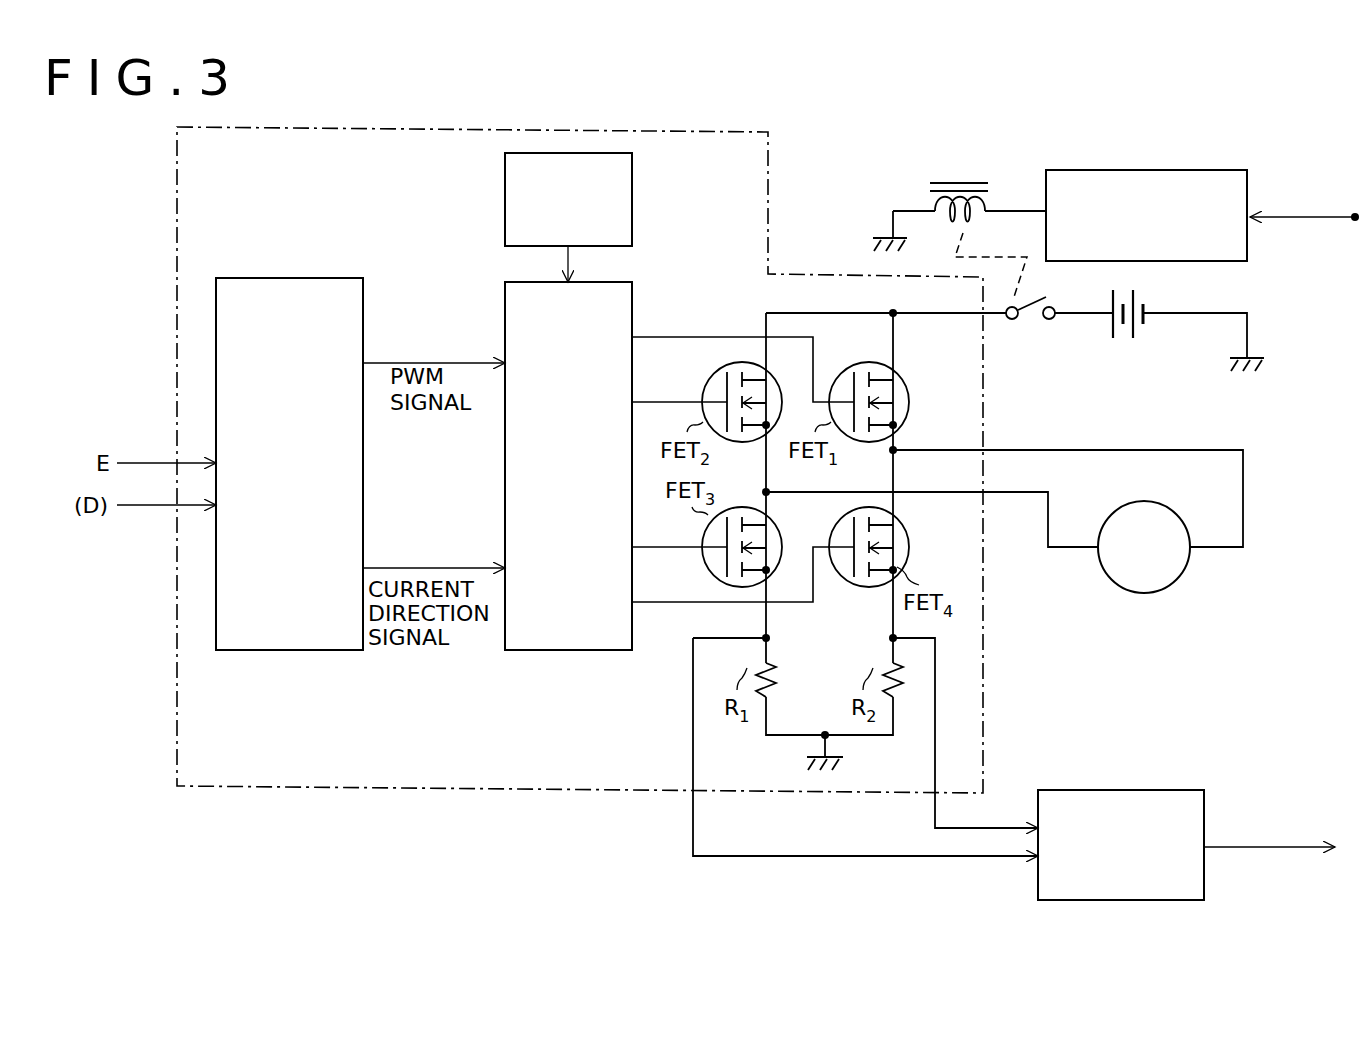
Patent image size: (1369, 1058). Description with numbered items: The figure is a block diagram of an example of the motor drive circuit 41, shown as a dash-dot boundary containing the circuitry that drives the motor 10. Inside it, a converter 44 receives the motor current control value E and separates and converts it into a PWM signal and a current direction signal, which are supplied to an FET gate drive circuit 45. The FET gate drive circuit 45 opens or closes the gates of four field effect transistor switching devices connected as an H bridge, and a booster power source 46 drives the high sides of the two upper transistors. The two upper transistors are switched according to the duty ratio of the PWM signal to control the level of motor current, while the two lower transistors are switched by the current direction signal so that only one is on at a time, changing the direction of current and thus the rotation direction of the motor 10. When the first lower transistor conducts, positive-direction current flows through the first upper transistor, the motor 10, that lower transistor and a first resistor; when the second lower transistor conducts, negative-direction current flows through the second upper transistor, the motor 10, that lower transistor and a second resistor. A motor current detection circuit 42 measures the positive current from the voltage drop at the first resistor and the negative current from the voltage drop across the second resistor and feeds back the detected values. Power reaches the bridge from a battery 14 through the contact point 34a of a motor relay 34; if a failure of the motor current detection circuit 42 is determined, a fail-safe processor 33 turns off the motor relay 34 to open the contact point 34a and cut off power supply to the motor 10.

The motor 10 is at (1178, 508).
The battery 14 is at (1143, 340).
The fail-safe processor 33 is at (1250, 190).
The motor relay 34 is at (978, 182).
The contact point 34a is at (1030, 328).
The motor drive circuit 41 is at (385, 790).
The motor current detection circuit 42 is at (1162, 790).
The converter 44 is at (333, 278).
The FET gate drive circuit 45 is at (632, 300).
The booster power source 46 is at (633, 200).